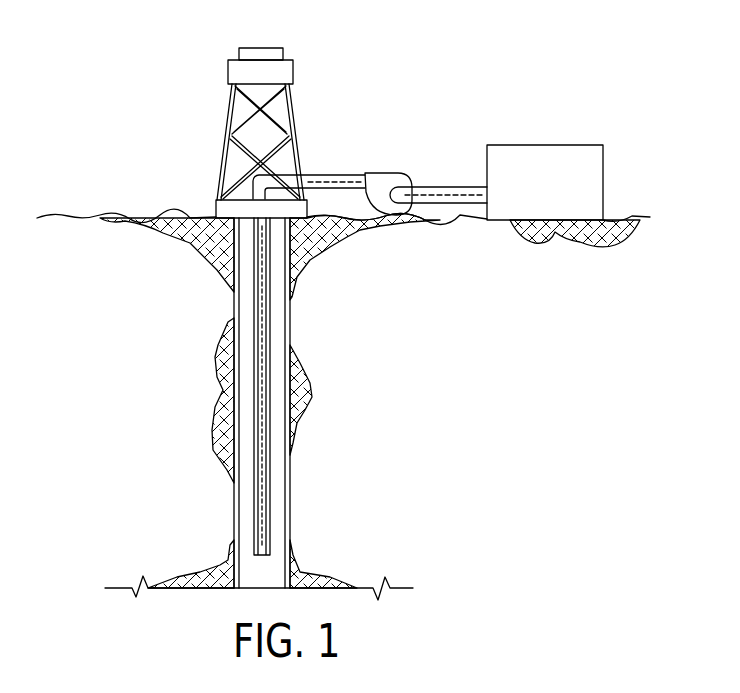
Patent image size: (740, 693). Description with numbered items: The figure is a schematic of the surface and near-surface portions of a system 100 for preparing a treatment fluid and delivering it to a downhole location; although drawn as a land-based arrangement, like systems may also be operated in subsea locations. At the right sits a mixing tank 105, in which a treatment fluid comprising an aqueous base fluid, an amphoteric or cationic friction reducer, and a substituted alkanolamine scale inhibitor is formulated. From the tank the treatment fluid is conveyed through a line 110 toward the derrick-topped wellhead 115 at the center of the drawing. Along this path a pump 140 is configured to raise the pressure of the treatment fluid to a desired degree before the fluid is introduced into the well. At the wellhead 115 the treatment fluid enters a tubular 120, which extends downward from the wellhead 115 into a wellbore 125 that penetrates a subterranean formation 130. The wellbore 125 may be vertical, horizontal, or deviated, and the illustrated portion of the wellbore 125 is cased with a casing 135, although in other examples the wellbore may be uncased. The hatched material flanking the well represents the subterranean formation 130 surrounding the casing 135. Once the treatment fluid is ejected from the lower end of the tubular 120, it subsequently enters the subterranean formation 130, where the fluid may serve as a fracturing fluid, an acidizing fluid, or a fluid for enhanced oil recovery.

The system 100 is at (156, 89).
The mixing tank 105 is at (553, 145).
The line 110 is at (332, 175).
The wellhead 115 is at (216, 215).
The tubular 120 is at (252, 506).
The wellbore 125 is at (295, 306).
The subterranean formation 130 is at (200, 389).
The casing 135 is at (286, 358).
The pump 140 is at (389, 175).